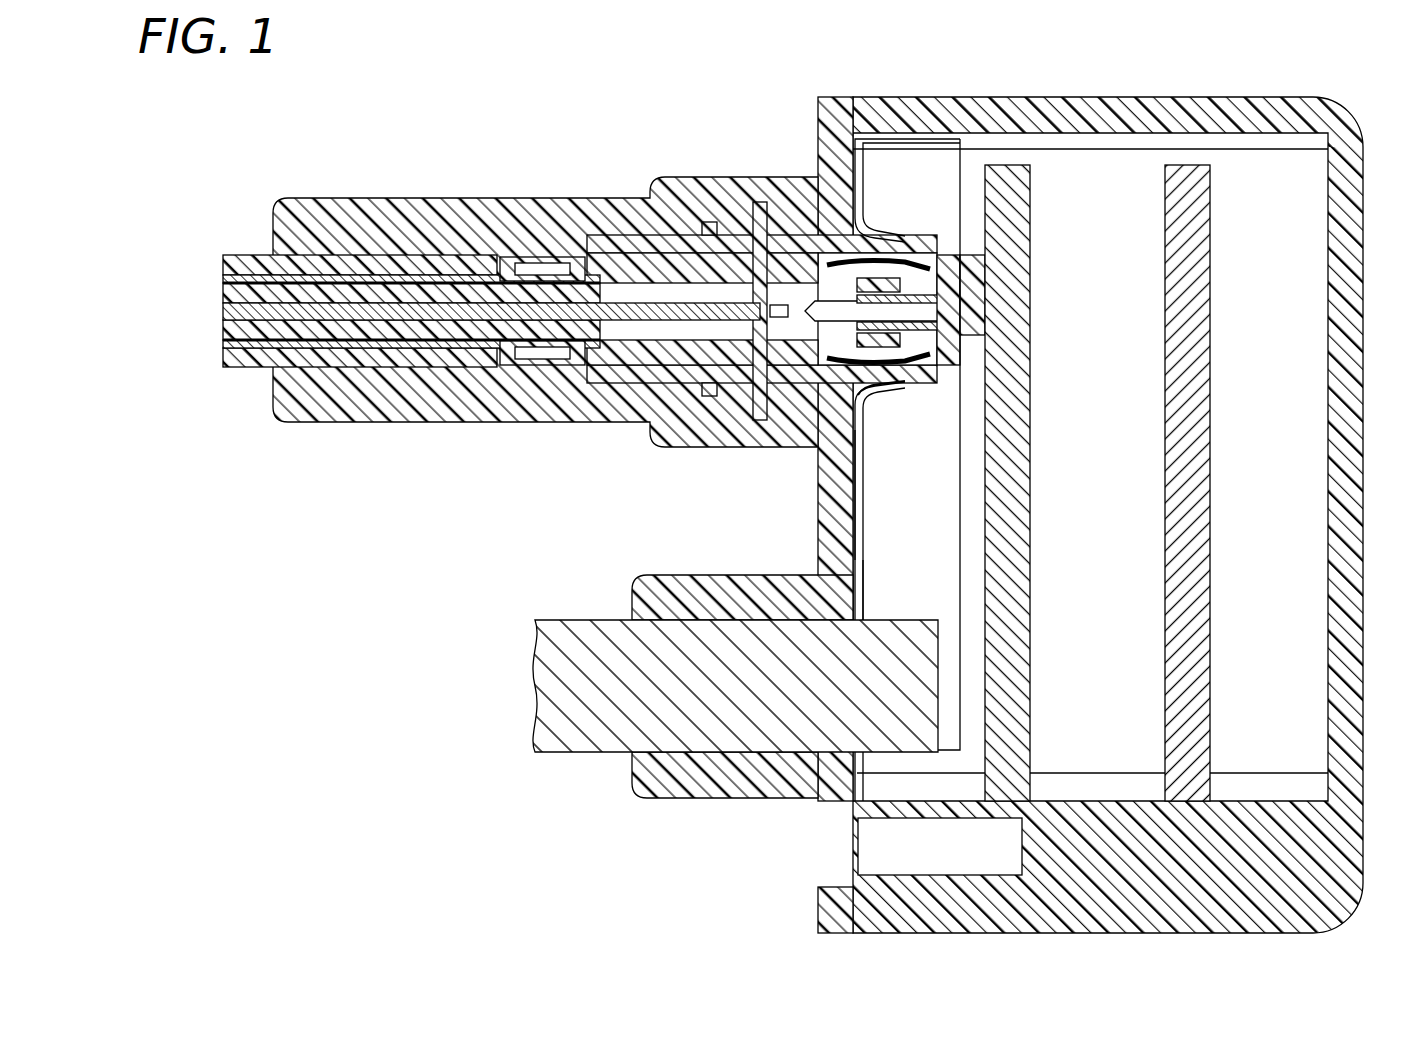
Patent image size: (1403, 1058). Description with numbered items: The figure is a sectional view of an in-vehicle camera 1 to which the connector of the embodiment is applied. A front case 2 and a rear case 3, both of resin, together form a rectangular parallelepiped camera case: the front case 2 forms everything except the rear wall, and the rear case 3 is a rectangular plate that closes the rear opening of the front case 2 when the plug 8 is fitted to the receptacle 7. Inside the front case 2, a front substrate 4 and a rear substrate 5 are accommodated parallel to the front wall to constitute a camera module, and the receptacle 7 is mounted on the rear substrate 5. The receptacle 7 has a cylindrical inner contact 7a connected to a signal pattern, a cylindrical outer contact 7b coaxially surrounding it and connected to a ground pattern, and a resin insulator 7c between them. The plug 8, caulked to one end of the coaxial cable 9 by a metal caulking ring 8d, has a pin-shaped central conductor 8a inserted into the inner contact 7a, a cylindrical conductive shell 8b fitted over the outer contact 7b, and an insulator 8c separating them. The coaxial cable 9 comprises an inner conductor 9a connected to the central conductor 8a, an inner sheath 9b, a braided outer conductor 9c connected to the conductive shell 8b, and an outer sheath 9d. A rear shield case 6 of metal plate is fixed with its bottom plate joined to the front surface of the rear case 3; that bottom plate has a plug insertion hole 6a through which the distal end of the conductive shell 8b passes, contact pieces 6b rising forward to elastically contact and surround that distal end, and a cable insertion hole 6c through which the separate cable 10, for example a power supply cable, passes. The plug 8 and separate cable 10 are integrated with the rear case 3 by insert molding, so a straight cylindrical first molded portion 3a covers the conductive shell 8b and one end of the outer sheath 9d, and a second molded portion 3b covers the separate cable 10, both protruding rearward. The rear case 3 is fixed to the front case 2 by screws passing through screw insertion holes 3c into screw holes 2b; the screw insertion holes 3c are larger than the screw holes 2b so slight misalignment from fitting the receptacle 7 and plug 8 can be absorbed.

The in-vehicle camera 1 is at (1140, 55).
The front case 2 is at (1268, 102).
The screw hole 2b is at (888, 870).
The rear case 3 is at (820, 98).
The first molded portion 3a is at (376, 423).
The second molded portion 3b is at (680, 578).
The screw insertion hole 3c is at (836, 886).
The front substrate 4 is at (1190, 182).
The rear substrate 5 is at (1016, 178).
The rear shield case 6 is at (859, 140).
The plug insertion hole 6a is at (882, 396).
The contact piece 6b is at (857, 482).
The cable insertion hole 6c is at (860, 576).
The receptacle 7 is at (972, 300).
The inner contact 7a is at (902, 252).
The outer contact 7b is at (950, 282).
The insulator 7c is at (938, 254).
The plug 8 is at (792, 238).
The central conductor 8a is at (756, 230).
The conductive shell 8b is at (606, 252).
The insulator 8c is at (690, 243).
The caulking ring 8d is at (522, 258).
The coaxial cable 9 is at (246, 253).
The inner conductor 9a is at (305, 300).
The inner sheath 9b is at (342, 266).
The outer conductor 9c is at (388, 292).
The outer sheath 9d is at (438, 260).
The separate cable 10 is at (552, 626).